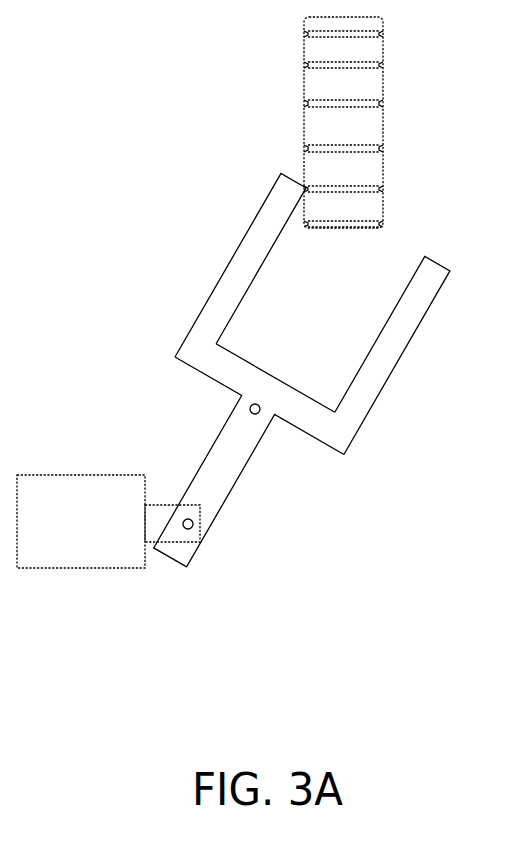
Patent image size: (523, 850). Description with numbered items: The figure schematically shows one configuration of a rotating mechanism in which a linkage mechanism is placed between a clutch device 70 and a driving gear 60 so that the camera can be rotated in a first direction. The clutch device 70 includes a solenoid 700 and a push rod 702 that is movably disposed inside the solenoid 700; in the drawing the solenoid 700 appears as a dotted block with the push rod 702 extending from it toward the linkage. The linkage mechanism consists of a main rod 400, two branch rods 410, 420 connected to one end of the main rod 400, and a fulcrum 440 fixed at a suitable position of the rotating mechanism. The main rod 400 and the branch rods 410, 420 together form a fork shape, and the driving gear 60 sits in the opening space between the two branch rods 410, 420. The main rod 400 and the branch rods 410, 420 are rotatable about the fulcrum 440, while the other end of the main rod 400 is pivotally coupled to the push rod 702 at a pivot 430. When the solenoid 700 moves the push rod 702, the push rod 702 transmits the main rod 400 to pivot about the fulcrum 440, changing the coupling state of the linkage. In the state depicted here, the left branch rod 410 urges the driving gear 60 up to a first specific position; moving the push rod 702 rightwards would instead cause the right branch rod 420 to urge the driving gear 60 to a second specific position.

The driving gear 60 is at (363, 123).
The main rod 400 is at (230, 472).
The left branch rod 410 is at (240, 265).
The right branch rod 420 is at (387, 350).
The first pivot hole 430 is at (192, 528).
The fulcrum 440 is at (259, 413).
The clutch device 70 is at (182, 416).
The solenoid 700 is at (83, 502).
The push rod 702 is at (158, 517).